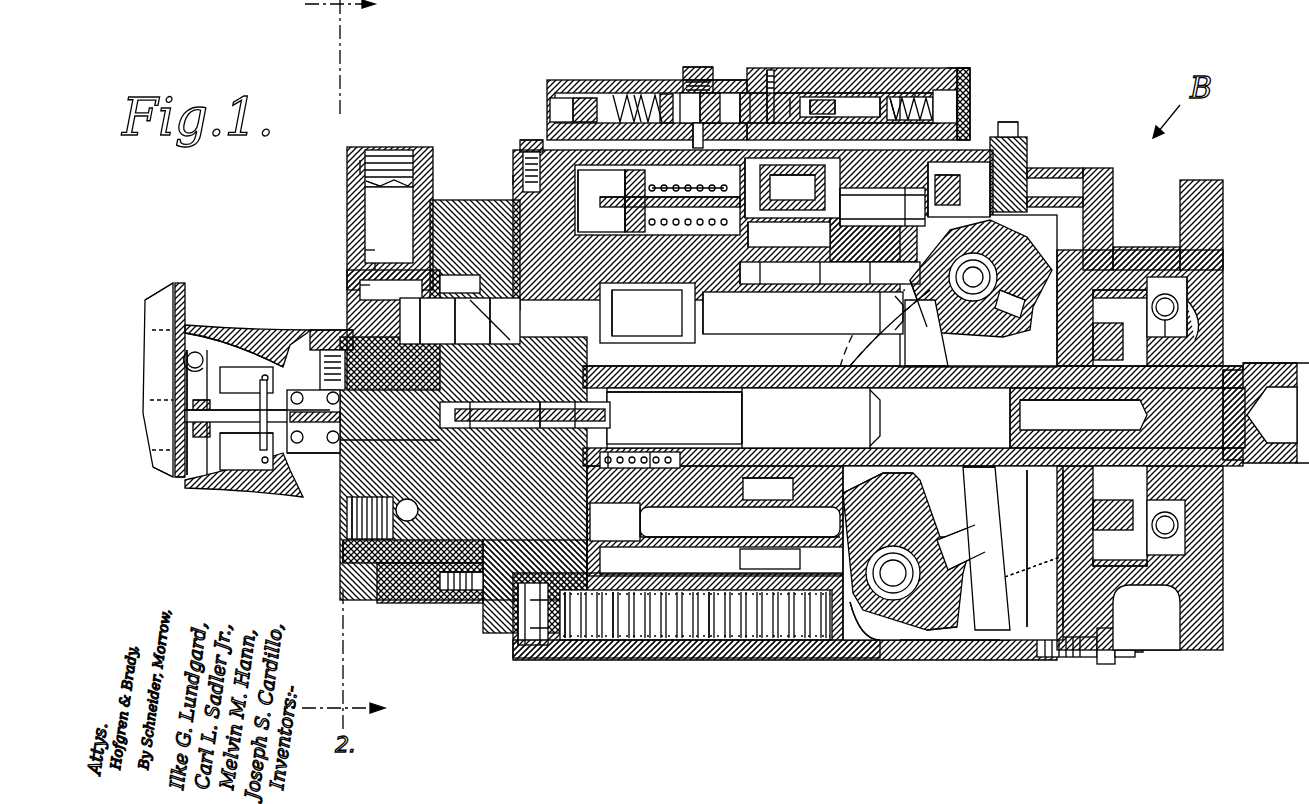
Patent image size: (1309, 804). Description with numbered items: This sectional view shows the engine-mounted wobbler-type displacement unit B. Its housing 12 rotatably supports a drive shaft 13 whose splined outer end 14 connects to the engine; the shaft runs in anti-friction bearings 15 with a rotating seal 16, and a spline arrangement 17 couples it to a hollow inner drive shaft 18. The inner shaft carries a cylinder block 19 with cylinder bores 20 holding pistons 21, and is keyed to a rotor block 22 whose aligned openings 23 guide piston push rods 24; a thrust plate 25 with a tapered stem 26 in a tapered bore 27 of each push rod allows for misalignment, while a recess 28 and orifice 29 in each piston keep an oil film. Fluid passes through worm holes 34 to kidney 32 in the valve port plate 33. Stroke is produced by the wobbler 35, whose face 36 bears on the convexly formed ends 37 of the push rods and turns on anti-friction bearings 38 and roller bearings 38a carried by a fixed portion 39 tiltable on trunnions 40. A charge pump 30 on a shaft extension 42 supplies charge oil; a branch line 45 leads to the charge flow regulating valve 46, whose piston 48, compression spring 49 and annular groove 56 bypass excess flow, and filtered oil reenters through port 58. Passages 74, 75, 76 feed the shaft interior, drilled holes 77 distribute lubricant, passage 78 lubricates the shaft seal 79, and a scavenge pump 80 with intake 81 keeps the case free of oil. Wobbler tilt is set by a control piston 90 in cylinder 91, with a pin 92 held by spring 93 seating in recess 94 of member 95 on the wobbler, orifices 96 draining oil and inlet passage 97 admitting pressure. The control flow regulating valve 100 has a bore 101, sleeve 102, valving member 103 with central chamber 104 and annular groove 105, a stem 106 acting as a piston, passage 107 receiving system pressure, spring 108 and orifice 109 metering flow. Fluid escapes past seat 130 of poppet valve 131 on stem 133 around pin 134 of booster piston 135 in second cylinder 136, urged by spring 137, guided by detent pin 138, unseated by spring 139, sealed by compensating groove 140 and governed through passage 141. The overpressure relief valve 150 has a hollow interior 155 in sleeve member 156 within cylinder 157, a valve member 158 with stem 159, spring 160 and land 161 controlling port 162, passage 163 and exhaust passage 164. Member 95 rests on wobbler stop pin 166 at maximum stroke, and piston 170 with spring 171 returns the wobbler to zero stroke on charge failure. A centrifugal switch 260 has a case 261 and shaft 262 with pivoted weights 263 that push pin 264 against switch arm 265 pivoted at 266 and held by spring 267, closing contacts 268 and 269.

The housing 12 is at (930, 657).
The drive shaft 13 is at (1232, 362).
The splined outer end 14 is at (1270, 465).
The anti-friction bearings 15 is at (1195, 295).
The rotating seal 16 is at (1180, 330).
The spline arrangement 17 is at (1095, 405).
The inner drive shaft 18 is at (965, 388).
The cylinder block 19 is at (595, 658).
The cylinder bores 20 is at (660, 660).
The pistons 21 is at (700, 275).
The rotor block 22 is at (810, 550).
The aligned openings 23 is at (770, 470).
The piston push rods 24 is at (760, 392).
The thrust plate 25 is at (645, 640).
The tapered stem 26 is at (708, 640).
The tapered bore 27 is at (703, 537).
The recess 28 is at (612, 452).
The orifice 29 is at (652, 452).
The charge pump 30 is at (352, 505).
The kidney 32 is at (586, 525).
The valve port plate 33 is at (470, 592).
The worm holes 34 is at (625, 262).
The wobbler 35 is at (980, 559).
The face 36 is at (900, 490).
The convexly formed ends 37 is at (890, 478).
The anti-friction bearings 38 is at (950, 535).
The roller bearings 38a is at (955, 580).
The fixed portion 39 is at (945, 612).
The trunnions 40 is at (862, 390).
The shaft extension 42 is at (540, 432).
The branch line 45 is at (360, 284).
The charge flow regulating valve 46 is at (358, 168).
The piston 48 is at (370, 264).
The compression spring 49 is at (368, 184).
The annular groove 56 is at (366, 250).
The port 58 is at (343, 548).
The passage 74 is at (431, 321).
The passage 75 is at (463, 321).
The passage 76 is at (495, 321).
The drilled holes 77 is at (735, 400).
The passage 78 is at (345, 345).
The shaft seal 79 is at (345, 460).
The scavenge pump 80 is at (1060, 503).
The intake 81 is at (1027, 569).
The control piston 90 is at (935, 176).
The cylinder 91 is at (772, 262).
The pin 92 is at (945, 180).
The spring 93 is at (915, 270).
The recess 94 is at (985, 185).
The member 95 is at (1028, 240).
The orifices 96 is at (890, 205).
The inlet passage 97 is at (757, 172).
The control flow regulating valve 100 is at (966, 84).
The bore 101 is at (950, 92).
The sleeve 102 is at (918, 92).
The valving member 103 is at (902, 96).
The central chamber 104 is at (893, 97).
The annular groove 105 is at (882, 95).
The stem 106 is at (822, 112).
The passage 107 is at (812, 98).
The spring 108 is at (985, 96).
The orifice 109 is at (838, 98).
The seat 130 is at (872, 262).
The poppet valve 131 is at (790, 230).
The stem 133 is at (748, 262).
The pin 134 is at (600, 220).
The booster piston 135 is at (600, 203).
The second cylinder 136 is at (513, 182).
The spring 137 is at (580, 188).
The detent pin 138 is at (778, 178).
The spring 139 is at (822, 262).
The annular compensating groove 140 is at (660, 228).
The passage 141 is at (530, 138).
The overpressure relief valve 150 is at (720, 60).
The hollow interior 155 is at (755, 92).
The sleeve member 156 is at (792, 95).
The cylinder 157 is at (620, 97).
The valve member 158 is at (722, 95).
The stem 159 is at (770, 90).
The spring 160 is at (640, 96).
The land 161 is at (698, 68).
The port 162 is at (692, 145).
The passage 163 is at (742, 110).
The exhaust passage 164 is at (720, 158).
The wobbler stop pin 166 is at (1005, 125).
The piston 170 is at (865, 660).
The spring 171 is at (835, 640).
The centrifugal switch 260 is at (235, 338).
The case 261 is at (250, 348).
The shaft 262 is at (310, 470).
The weights 263 is at (245, 472).
The pin 264 is at (232, 405).
The switch arm 265 is at (195, 383).
The pivot 266 is at (185, 355).
The spring 267 is at (190, 480).
The contact 268 is at (175, 440).
The contact 269 is at (225, 420).